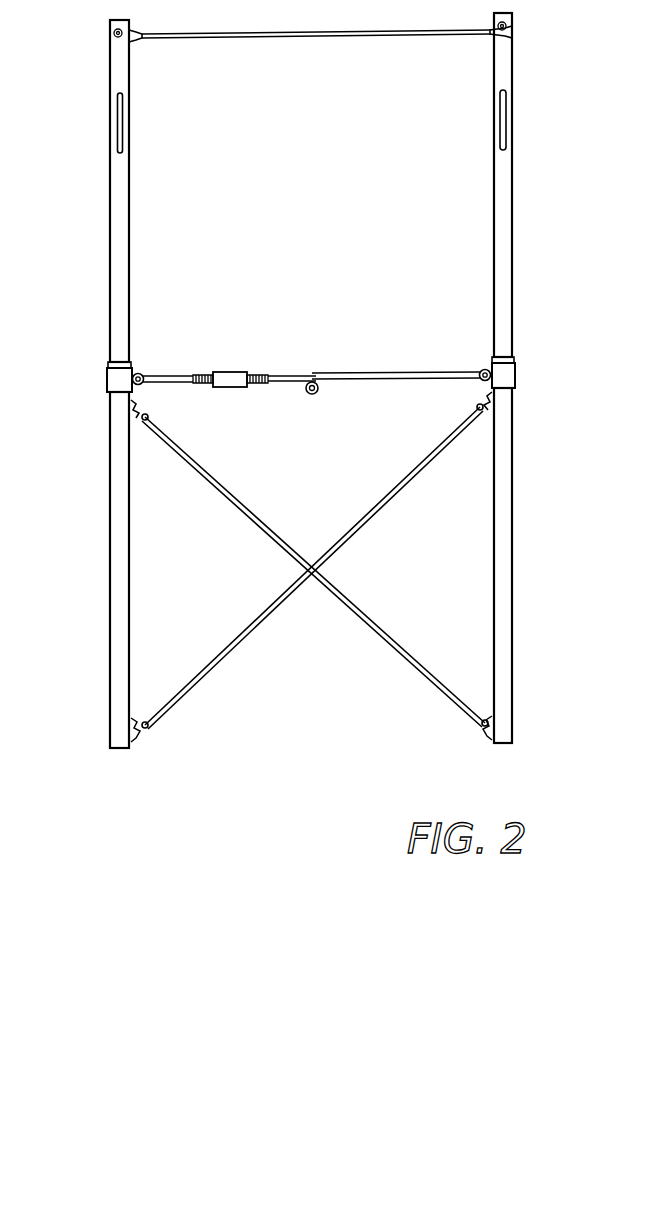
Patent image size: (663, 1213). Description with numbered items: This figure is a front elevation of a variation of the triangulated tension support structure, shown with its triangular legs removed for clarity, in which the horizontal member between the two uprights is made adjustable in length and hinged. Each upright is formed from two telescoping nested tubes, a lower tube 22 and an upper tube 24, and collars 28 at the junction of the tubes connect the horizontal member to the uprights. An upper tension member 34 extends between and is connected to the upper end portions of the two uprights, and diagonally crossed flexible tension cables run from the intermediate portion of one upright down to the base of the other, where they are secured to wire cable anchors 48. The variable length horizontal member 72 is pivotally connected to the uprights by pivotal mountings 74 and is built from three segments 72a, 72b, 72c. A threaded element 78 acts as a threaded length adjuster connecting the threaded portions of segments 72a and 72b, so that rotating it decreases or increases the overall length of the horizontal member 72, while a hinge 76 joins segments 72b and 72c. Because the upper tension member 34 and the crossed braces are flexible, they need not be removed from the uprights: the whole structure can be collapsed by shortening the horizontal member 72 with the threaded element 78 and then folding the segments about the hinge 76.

The lower tube 22 is at (127, 547).
The upper tube 24 is at (113, 232).
The collar 28 is at (105, 380).
The upper tension member 34 is at (298, 38).
The wire cable anchor 48 is at (135, 735).
The horizontal member 72 is at (311, 368).
The segment 72a is at (198, 392).
The segment 72b is at (278, 392).
The segment 72c is at (388, 385).
The pivotal mounting 74 is at (142, 373).
The hinge 76 is at (314, 395).
The threaded element 78 is at (232, 372).